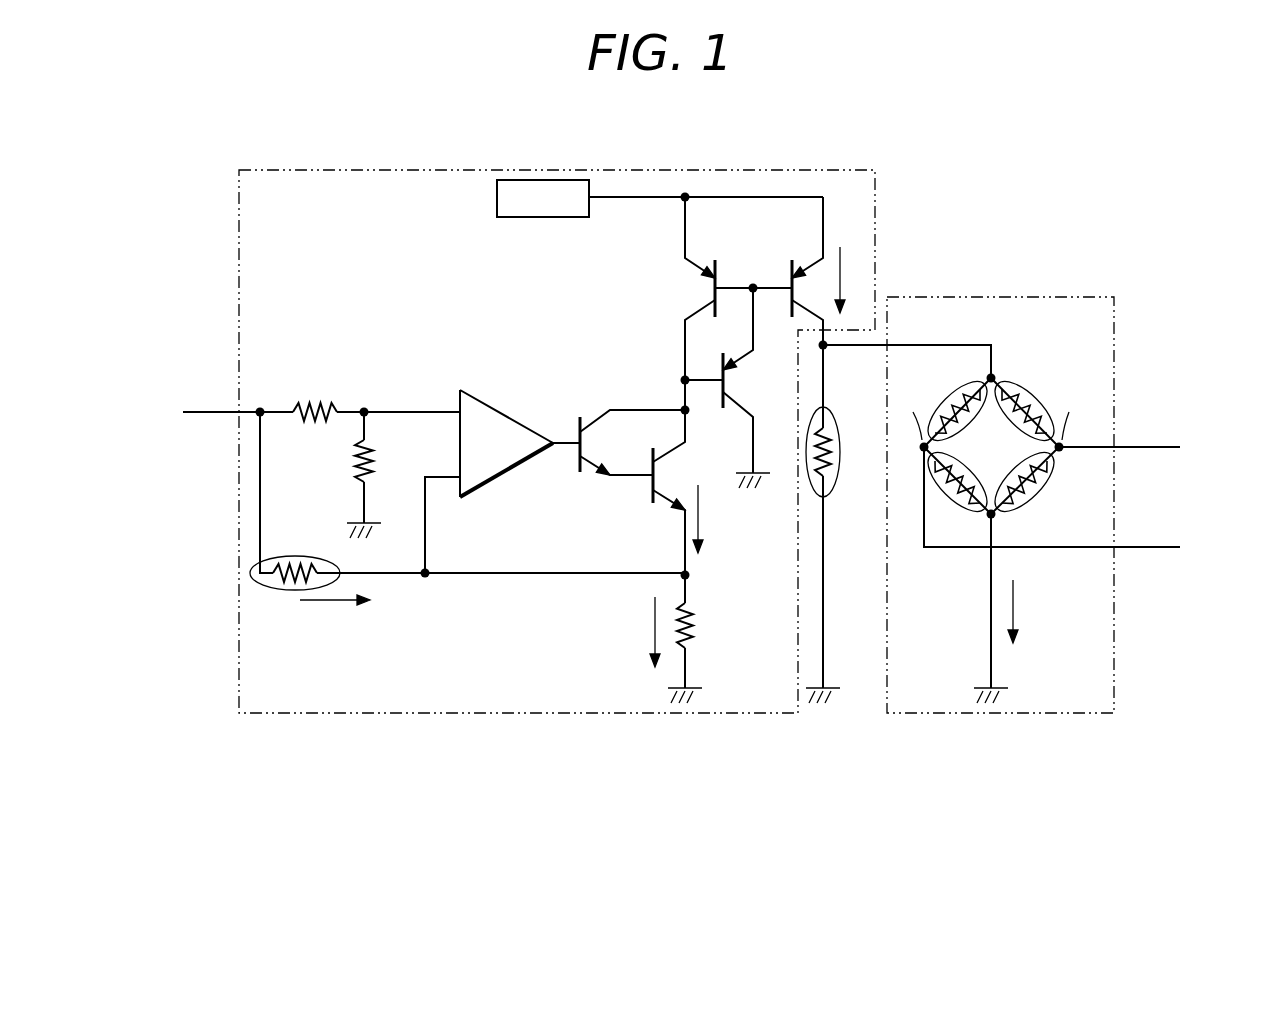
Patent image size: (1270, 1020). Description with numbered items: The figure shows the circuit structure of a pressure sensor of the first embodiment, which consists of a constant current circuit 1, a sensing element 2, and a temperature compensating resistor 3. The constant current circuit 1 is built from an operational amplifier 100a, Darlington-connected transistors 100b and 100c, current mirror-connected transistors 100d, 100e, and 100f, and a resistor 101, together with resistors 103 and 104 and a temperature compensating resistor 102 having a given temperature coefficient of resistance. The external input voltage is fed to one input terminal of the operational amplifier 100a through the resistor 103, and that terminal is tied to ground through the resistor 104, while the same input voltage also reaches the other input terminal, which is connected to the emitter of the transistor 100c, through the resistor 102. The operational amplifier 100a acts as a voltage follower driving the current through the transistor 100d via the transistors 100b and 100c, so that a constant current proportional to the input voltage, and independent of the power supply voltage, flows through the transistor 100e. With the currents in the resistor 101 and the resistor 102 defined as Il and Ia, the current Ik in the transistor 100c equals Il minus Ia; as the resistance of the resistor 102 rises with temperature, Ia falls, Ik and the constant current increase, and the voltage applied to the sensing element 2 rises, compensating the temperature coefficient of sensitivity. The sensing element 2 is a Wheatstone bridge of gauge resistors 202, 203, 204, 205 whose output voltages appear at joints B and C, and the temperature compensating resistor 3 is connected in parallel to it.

The constant current circuit 1 is at (843, 170).
The sensing element 2 is at (1075, 297).
The temperature compensating resistor 3 is at (840, 452).
The resistor 101 is at (700, 627).
The temperature compensating resistor 102 is at (296, 556).
The resistor 103 is at (320, 400).
The resistor 104 is at (352, 456).
The operational amplifier 100a is at (505, 410).
The transistor 100b is at (580, 420).
The transistor 100c is at (650, 470).
The transistor 100d is at (700, 272).
The transistor 100e is at (800, 270).
The transistor 100f is at (740, 360).
The gauge resistor 202 is at (940, 403).
The gauge resistor 203 is at (1043, 403).
The gauge resistor 204 is at (943, 492).
The gauge resistor 205 is at (1040, 492).